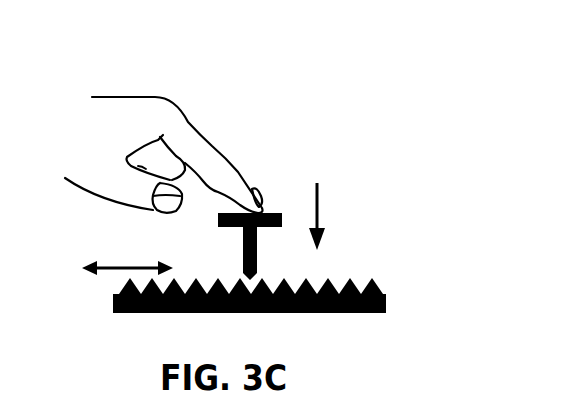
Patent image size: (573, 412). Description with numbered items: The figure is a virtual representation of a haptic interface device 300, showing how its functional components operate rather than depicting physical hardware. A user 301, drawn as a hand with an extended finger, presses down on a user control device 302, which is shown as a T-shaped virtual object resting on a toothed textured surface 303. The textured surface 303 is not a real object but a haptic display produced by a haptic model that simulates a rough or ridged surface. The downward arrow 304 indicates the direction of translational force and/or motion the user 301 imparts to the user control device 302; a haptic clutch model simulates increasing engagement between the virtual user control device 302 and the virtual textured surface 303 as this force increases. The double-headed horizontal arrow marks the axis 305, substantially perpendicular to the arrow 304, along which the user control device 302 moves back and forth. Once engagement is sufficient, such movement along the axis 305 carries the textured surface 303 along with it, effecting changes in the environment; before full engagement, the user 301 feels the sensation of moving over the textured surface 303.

The haptic interface device 300 is at (307, 68).
The user 301 is at (188, 122).
The user control device 302 is at (217, 219).
The textured surface 303 is at (328, 276).
The arrow 304 is at (318, 190).
The axis 305 is at (120, 267).